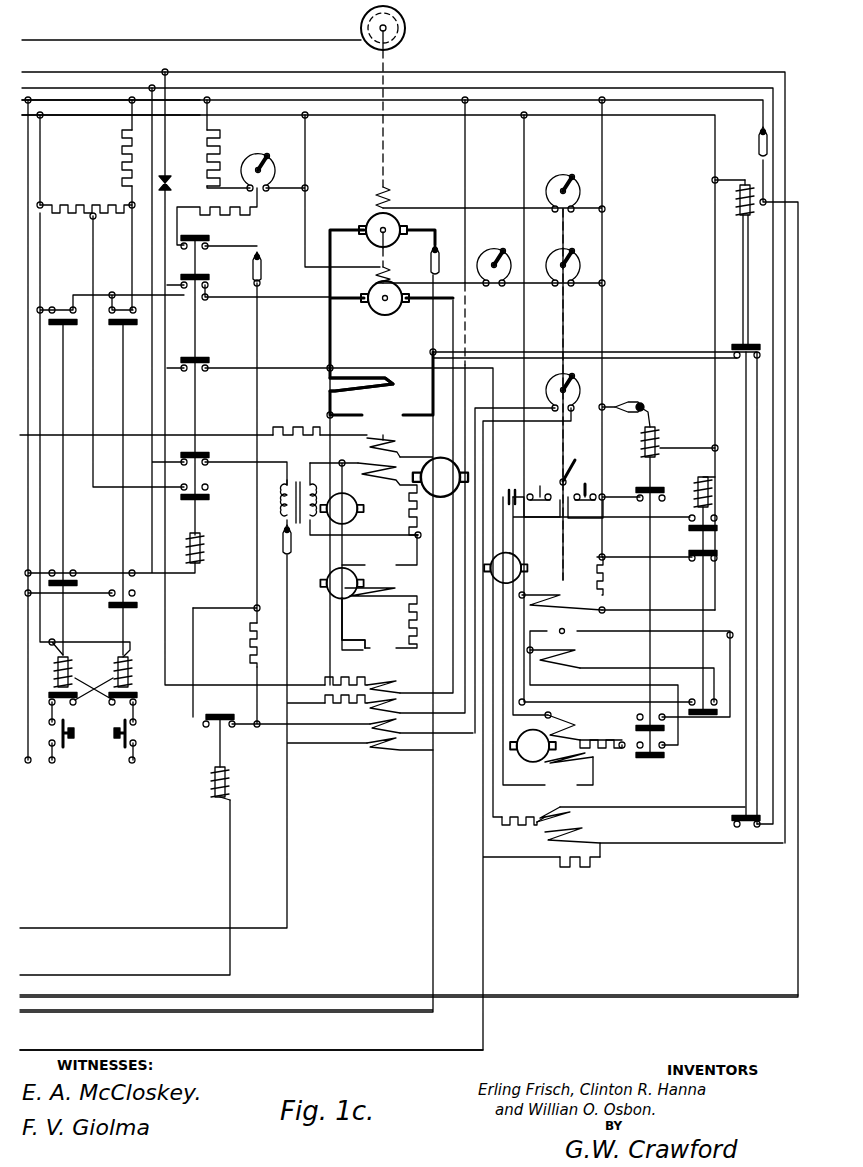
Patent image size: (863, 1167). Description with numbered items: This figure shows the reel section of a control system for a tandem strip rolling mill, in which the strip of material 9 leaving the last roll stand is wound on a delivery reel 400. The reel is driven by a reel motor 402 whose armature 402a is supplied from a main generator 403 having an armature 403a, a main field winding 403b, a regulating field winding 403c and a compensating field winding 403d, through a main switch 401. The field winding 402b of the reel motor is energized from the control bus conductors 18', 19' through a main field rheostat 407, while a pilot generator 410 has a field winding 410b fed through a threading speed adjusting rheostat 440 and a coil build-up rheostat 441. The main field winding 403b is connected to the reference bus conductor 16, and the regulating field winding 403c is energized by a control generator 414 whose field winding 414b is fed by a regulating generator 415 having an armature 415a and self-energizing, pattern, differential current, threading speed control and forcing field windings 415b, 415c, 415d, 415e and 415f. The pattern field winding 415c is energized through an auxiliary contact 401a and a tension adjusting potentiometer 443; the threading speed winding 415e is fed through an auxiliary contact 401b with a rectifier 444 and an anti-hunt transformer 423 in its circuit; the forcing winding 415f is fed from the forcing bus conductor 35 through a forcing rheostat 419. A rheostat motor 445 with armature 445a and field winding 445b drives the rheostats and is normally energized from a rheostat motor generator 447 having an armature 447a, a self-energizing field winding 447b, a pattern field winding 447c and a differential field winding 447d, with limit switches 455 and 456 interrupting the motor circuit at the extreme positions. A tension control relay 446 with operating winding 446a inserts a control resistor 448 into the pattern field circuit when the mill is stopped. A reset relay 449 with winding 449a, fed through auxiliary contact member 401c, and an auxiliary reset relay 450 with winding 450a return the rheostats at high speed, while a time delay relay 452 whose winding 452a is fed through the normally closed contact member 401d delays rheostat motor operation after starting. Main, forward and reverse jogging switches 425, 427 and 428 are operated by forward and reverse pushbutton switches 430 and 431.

The strip of material 9 is at (282, 30).
The delivery reel 400 is at (458, 25).
The control bus conductor 18' is at (182, 105).
The control bus conductor 19' is at (187, 124).
The reference bus conductor 16 is at (330, 1004).
The forcing bus conductor 35 is at (315, 1040).
The tension adjusting potentiometer 443 is at (252, 156).
The rectifier 444 is at (178, 182).
The field winding of the reel motor 402b is at (390, 196).
The reel motor 402 is at (345, 211).
The armature of the reel motor 402a is at (362, 240).
The main switch 401 is at (440, 243).
The field winding of the pilot generator 410b is at (398, 269).
The pilot generator 410 is at (378, 320).
The auxiliary contact of the main switch 401a is at (277, 266).
The main field rheostat 407 is at (553, 178).
The threading speed adjusting rheostat 440 is at (493, 257).
The coil build-up rheostat 441 is at (552, 255).
The normally closed auxiliary contact member of the main switch 401d is at (758, 135).
The operating winding of the time delay relay 452a is at (745, 183).
The time delay relay 452 is at (742, 290).
The compensating field winding of the main generator 403d is at (378, 381).
The main generator 403 is at (435, 438).
The armature of the main generator 403a is at (392, 412).
The main field winding of the main generator 403b is at (401, 447).
The regulating field winding of the main generator 403c is at (388, 499).
The anti-hunt transformer 423 is at (289, 493).
The auxiliary contact of the main switch 401b is at (292, 548).
The control generator 414 is at (380, 553).
The field winding of the control generator 414b is at (375, 613).
The self-energizing field winding 415b is at (363, 623).
The regulating generator 415 is at (420, 668).
The armature of the regulating generator 415a is at (351, 658).
The differential current field winding 415d is at (399, 683).
The threading speed control field winding 415e is at (398, 703).
The pattern field winding 415c is at (399, 723).
The forcing field winding 415f is at (400, 742).
The main switch of the reel motor 425 is at (58, 525).
The reverse jogging switch 428 is at (116, 525).
The forward jogging switch 427 is at (198, 530).
The forward pushbutton switch 430 is at (70, 727).
The reverse pushbutton switch 431 is at (130, 736).
The control resistor 448 is at (245, 648).
The tension control relay 446 is at (262, 749).
The operating winding of the tension control relay 446a is at (210, 782).
The forcing rheostat 419 is at (560, 378).
The auxiliary contact member of the main switch 401c is at (630, 402).
The operating winding of the reset relay 449a is at (670, 442).
The reset relay 449 is at (640, 480).
The operating winding of the auxiliary reset relay 450a is at (700, 477).
The auxiliary reset relay 450 is at (698, 586).
The limit switch 455 is at (542, 488).
The limit switch 456 is at (585, 501).
The field winding of the rheostat motor 445b is at (558, 595).
The armature of the rheostat motor 445a is at (578, 618).
The rheostat motor 445 is at (616, 655).
The self-energizing field winding of the rheostat generator 447b is at (544, 727).
The armature of the rheostat motor generator 447a is at (550, 778).
The rheostat motor generator 447 is at (622, 786).
The differential field winding of the rheostat generator 447d is at (577, 812).
The pattern field winding of the rheostat generator 447c is at (580, 833).